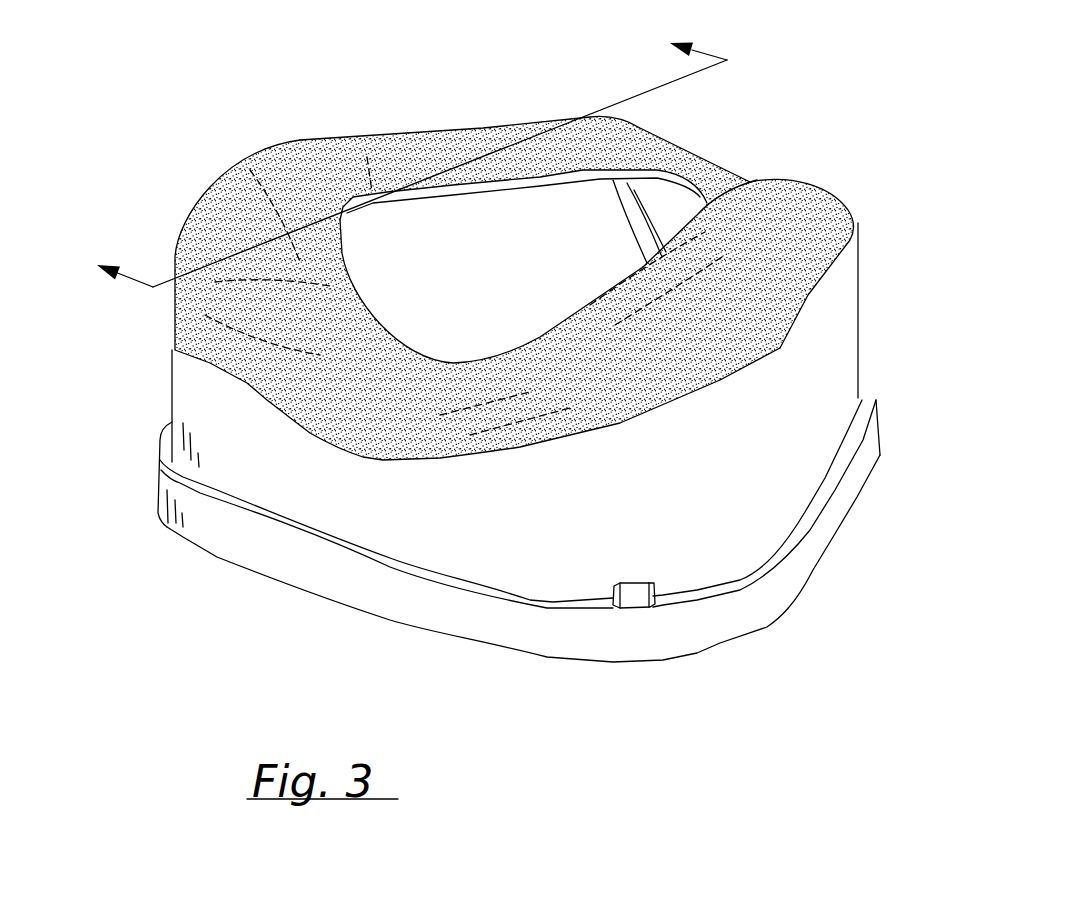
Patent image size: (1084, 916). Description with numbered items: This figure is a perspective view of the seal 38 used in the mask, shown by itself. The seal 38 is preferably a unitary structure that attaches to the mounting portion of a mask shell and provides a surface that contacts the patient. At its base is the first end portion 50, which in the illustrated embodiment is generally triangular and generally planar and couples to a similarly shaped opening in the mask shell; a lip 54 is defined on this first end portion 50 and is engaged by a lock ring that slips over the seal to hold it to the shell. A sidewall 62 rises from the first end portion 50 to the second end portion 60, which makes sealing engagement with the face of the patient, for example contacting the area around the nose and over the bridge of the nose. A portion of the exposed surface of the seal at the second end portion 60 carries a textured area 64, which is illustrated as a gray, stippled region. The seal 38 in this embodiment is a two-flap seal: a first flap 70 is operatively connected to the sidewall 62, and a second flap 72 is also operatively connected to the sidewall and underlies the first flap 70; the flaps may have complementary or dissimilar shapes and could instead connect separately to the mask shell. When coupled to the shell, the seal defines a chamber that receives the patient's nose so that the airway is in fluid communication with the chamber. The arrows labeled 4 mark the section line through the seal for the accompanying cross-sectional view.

The second end portion 60 is at (412, 150).
The textured area 64 is at (783, 210).
The first flap 70 is at (440, 190).
The second flap 72 is at (612, 186).
The sidewall 62 is at (838, 300).
The lip 54 is at (163, 458).
The first end portion 50 is at (272, 560).
The seal 38 is at (570, 573).
The section line 4- 4 is at (394, 156).